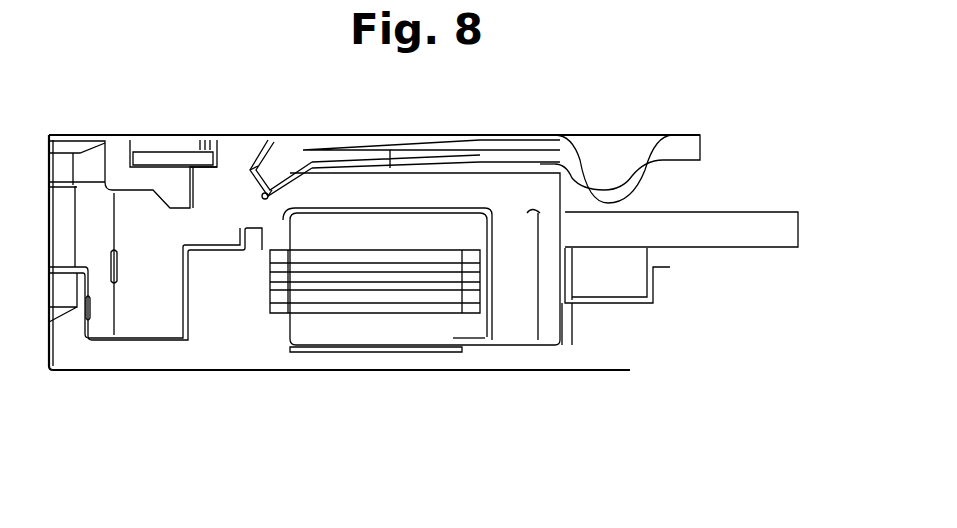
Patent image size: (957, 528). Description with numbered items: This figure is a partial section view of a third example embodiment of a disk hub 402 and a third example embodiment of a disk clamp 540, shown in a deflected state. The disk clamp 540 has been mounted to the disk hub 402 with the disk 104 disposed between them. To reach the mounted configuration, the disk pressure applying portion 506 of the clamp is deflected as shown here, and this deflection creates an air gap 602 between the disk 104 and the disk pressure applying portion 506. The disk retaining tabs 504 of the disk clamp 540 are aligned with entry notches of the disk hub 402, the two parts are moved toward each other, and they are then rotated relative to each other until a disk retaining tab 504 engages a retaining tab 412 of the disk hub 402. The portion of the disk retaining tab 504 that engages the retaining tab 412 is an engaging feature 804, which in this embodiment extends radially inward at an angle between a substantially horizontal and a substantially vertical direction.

The disk 104 is at (761, 221).
The disk hub 402 is at (236, 144).
The retaining tab 412 is at (255, 147).
The disk retaining tab 504 is at (303, 157).
The disk pressure applying portion 506 is at (608, 193).
The disk clamp 540 is at (495, 142).
The air gap 602 is at (613, 214).
The engaging feature 804 is at (265, 196).